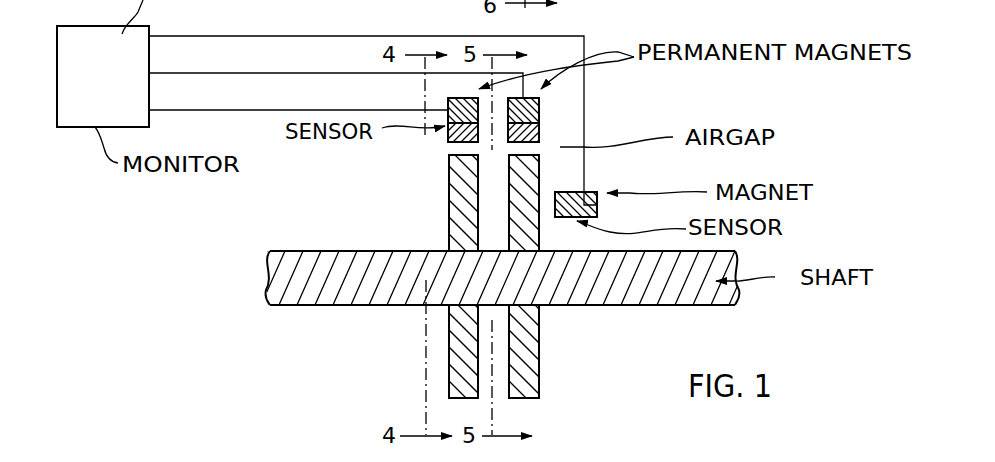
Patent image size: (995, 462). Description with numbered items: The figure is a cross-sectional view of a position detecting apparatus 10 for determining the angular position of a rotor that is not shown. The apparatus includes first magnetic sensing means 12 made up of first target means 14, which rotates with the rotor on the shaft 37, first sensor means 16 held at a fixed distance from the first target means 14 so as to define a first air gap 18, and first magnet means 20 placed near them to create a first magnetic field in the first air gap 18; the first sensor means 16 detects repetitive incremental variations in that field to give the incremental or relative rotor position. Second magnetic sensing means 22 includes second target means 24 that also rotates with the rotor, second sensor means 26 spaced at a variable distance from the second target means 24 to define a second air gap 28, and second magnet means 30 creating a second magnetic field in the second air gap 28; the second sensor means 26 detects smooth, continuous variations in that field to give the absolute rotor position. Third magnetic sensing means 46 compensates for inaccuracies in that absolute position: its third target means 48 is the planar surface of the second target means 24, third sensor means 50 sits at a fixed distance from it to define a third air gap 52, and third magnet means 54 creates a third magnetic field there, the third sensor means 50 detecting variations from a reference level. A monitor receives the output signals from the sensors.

The position detecting apparatus 10 is at (646, 113).
The first magnetic sensing means 12 is at (408, 173).
The first target means 14 is at (448, 218).
The first sensor means 16 is at (447, 138).
The first air gap 18 is at (452, 151).
The first magnet means 20 is at (447, 98).
The second magnetic sensing means 22 is at (565, 114).
The second target means 24 is at (543, 147).
The second sensor means 26 is at (540, 131).
The second air gap 28 is at (508, 151).
The second magnet means 30 is at (564, 113).
The shaft 37 is at (585, 305).
The third magnetic sensing means 46 is at (621, 179).
The third target means 48 is at (542, 239).
The third sensor means 50 is at (571, 199).
The third air gap 52 is at (551, 204).
The third magnet means 54 is at (598, 211).